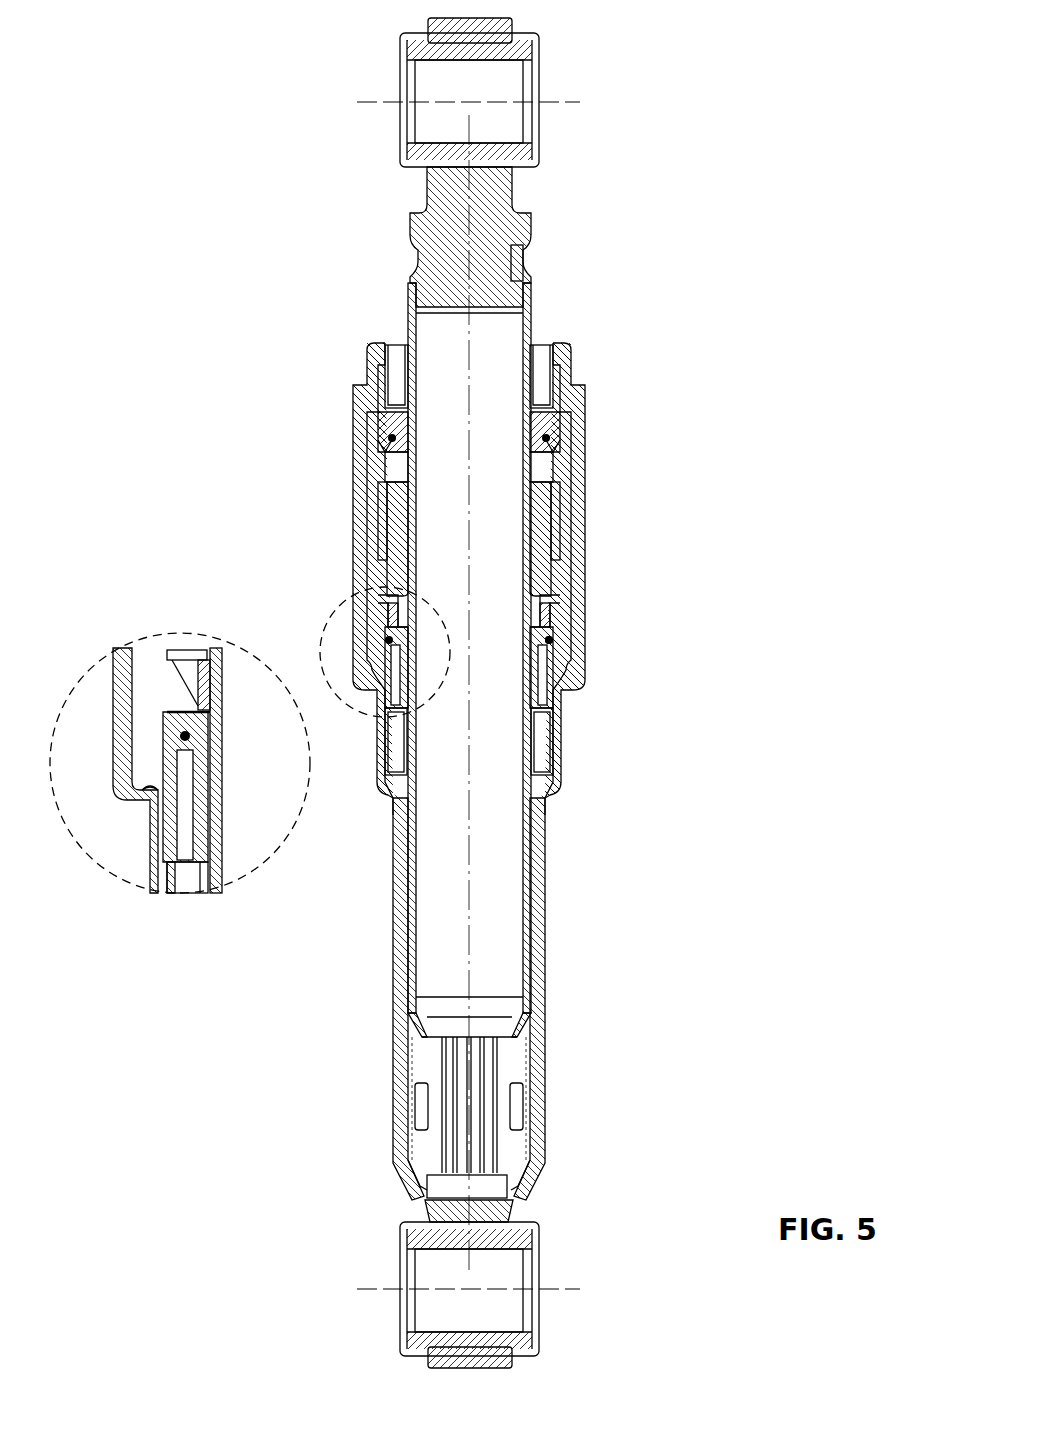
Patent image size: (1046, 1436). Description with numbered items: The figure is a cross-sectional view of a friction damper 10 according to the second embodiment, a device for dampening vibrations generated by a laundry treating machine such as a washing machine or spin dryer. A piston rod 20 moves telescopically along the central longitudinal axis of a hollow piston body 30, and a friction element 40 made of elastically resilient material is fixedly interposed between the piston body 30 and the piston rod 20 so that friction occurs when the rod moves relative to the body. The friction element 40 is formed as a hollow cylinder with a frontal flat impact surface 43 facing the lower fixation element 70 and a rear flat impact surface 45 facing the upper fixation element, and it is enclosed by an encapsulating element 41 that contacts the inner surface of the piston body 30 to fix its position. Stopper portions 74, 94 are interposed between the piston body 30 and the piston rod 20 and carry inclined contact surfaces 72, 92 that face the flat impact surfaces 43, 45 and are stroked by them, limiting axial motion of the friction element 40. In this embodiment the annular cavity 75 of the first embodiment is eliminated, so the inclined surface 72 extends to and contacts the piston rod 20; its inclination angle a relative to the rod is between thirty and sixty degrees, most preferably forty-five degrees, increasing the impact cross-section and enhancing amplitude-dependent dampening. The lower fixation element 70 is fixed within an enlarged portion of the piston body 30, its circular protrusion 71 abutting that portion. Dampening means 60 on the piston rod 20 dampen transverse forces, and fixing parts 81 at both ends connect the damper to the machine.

The friction damper 10 is at (670, 273).
The piston rod 20 is at (408, 283).
The piston body 30 is at (542, 890).
The friction element 40 is at (535, 550).
The encapsulating element 41 is at (386, 543).
The frontal flat impact surface 43 is at (394, 614).
The rear flat impact surface 45 is at (394, 478).
The dampening means 60 is at (538, 355).
The lower fixation element 70 is at (388, 692).
The circular protrusion 71 is at (155, 797).
The inclined contact surface 72 is at (540, 632).
The stopper portion 74 is at (549, 641).
The annular cavity 75 is at (205, 660).
The fixing part 81 is at (526, 50).
The inclined contact surface 92 is at (553, 455).
The stopper portion 94 is at (392, 438).
The inclination angle a is at (190, 703).